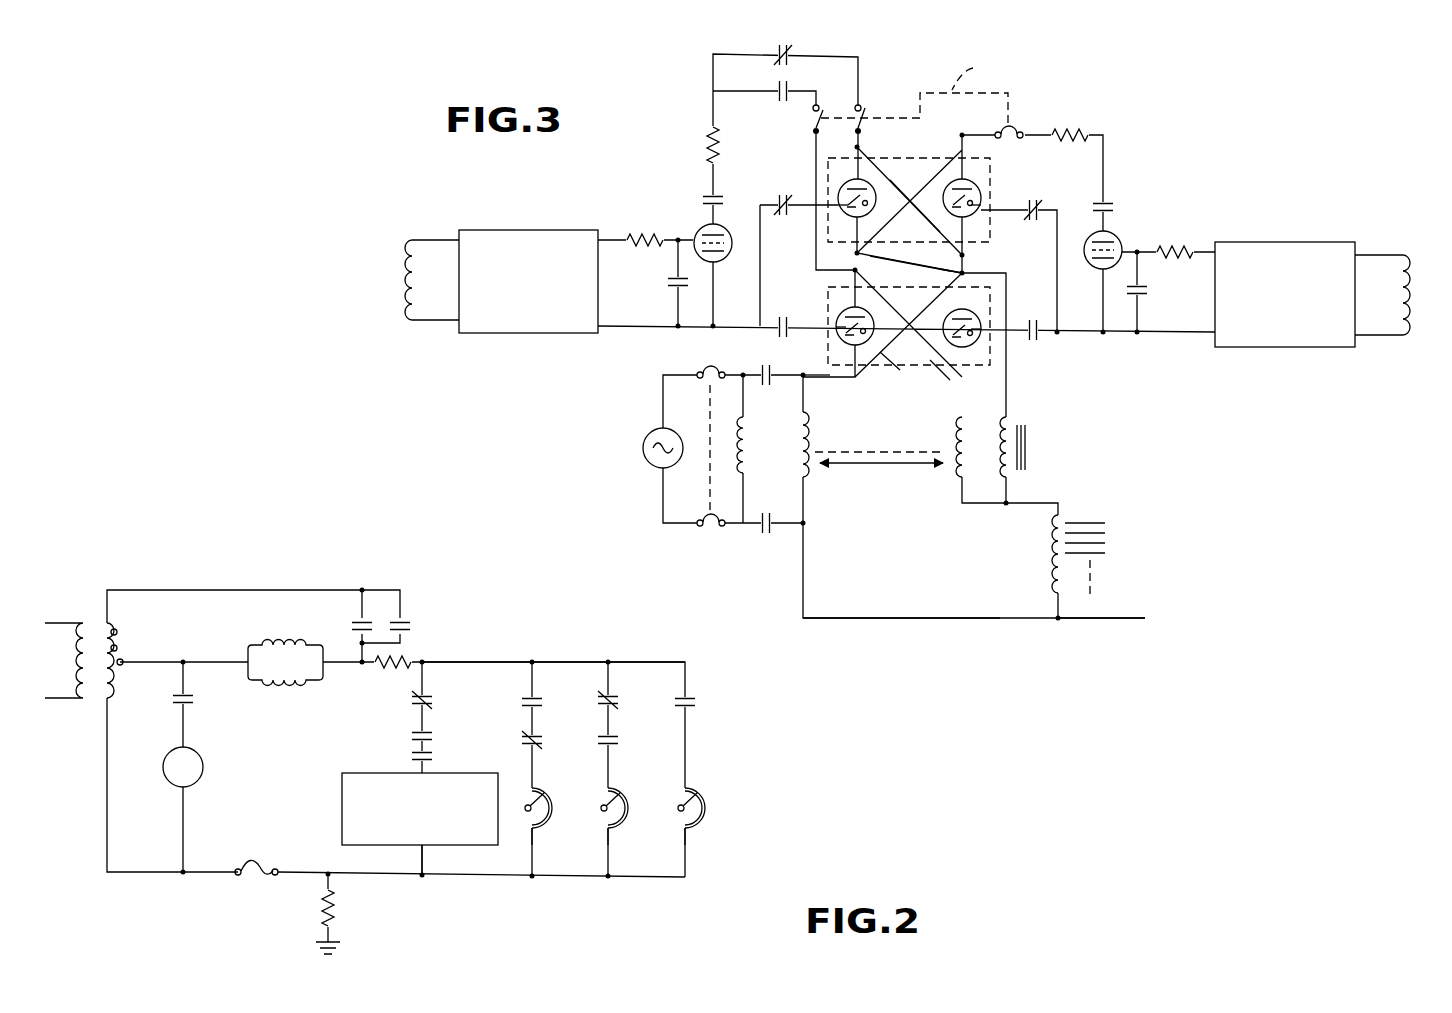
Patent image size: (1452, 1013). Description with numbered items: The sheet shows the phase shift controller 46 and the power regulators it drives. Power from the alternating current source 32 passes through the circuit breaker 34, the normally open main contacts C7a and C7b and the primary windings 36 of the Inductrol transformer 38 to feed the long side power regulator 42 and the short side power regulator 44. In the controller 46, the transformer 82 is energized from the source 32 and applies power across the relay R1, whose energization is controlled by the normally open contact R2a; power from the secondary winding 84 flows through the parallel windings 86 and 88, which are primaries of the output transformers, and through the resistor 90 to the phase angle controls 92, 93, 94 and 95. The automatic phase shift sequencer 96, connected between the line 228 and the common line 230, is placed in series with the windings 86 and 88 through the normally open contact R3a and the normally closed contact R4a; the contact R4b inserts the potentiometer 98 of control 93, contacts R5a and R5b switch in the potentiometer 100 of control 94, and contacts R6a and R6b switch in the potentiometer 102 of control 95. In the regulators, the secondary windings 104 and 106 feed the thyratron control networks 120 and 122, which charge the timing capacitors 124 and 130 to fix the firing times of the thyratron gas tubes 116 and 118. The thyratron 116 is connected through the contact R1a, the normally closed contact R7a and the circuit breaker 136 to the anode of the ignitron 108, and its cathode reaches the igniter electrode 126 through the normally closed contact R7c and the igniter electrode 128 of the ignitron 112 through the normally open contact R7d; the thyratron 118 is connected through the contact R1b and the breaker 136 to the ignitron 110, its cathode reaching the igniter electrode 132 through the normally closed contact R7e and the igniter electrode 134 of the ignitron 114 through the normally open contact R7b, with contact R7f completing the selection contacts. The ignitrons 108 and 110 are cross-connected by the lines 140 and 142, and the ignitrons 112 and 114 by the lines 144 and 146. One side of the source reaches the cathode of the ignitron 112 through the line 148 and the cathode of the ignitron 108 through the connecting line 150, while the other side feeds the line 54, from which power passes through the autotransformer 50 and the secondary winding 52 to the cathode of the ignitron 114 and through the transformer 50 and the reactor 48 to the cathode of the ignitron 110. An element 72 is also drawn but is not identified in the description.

In FIG. 3, the source of alternating current 32 is at (648, 432).
In FIG. 3, the circuit breaker 34 is at (708, 432).
In FIG. 3, the primary windings 36 is at (814, 437).
In FIG. 3, the Inductrol transformer 38 is at (880, 464).
In FIG. 3, the long side power regulator 42 is at (990, 176).
In FIG. 3, the short side power regulator 44 is at (990, 365).
In FIG. 2, the phase shift controller 46 is at (453, 660).
In FIG. 3, the reactor 48 is at (1012, 425).
In FIG. 3, the autotransformer 50 is at (1050, 560).
In FIG. 3, the secondary winding 52 is at (953, 436).
In FIG. 3, the line 54 is at (848, 618).
In FIG. 3, the output conductor 72 is at (1115, 618).
In FIG. 2, the transformer 82 is at (96, 618).
In FIG. 2, the secondary winding 84 is at (123, 646).
In FIG. 2, the output winding 86 is at (300, 640).
In FIG. 2, the output winding 88 is at (275, 690).
In FIG. 2, the resistor 90 is at (389, 670).
In FIG. 2, the phase angle control 92 is at (396, 750).
In FIG. 2, the phase angle control 93 is at (545, 784).
In FIG. 2, the phase angle control 94 is at (621, 784).
In FIG. 2, the phase angle control circuit 95 is at (698, 784).
In FIG. 2, the automatic phase shift sequencer 96 is at (342, 806).
In FIG. 2, the potentiometer 98 is at (540, 830).
In FIG. 2, the potentiometer 100 is at (616, 830).
In FIG. 2, the potentiometer 102 is at (694, 830).
In FIG. 3, the secondary winding 104 is at (404, 263).
In FIG. 3, the secondary winding 106 is at (1412, 280).
In FIG. 3, the ignitron 108 is at (884, 175).
In FIG. 3, the ignitron 110 is at (942, 165).
In FIG. 3, the ignitron 112 is at (872, 310).
In FIG. 3, the ignitron 114 is at (946, 313).
In FIG. 3, the thyratron gas tube 116 is at (717, 228).
In FIG. 3, the thyratron gas tube 118 is at (1121, 238).
In FIG. 3, the thyratron control network 120 is at (538, 333).
In FIG. 3, the thyratron control network 122 is at (1280, 347).
In FIG. 3, the timing capacitor 124 is at (670, 286).
In FIG. 3, the igniter electrode 126 is at (840, 200).
In FIG. 3, the igniter electrode 128 is at (838, 336).
In FIG. 3, the timing capacitor 130 is at (1150, 290).
In FIG. 3, the igniter electrode 132 is at (981, 205).
In FIG. 3, the igniter electrode 134 is at (983, 336).
In FIG. 3, the circuit breaker 136 is at (984, 73).
In FIG. 3, the line 140 is at (884, 224).
In FIG. 3, the line 142 is at (940, 258).
In FIG. 3, the line 144 is at (884, 350).
In FIG. 3, the line 146 is at (943, 372).
In FIG. 3, the line 148 is at (828, 385).
In FIG. 3, the connecting line 150 is at (945, 265).
In FIG. 2, the line 228 is at (431, 757).
In FIG. 2, the common line 230 is at (416, 866).
In FIG. 2, the relay R1 is at (168, 782).
In FIG. 3, the relay contact R1a is at (706, 200).
In FIG. 3, the relay contact R1b is at (1121, 206).
In FIG. 2, the relay contact R2a is at (192, 700).
In FIG. 2, the relay contact R3a is at (431, 737).
In FIG. 2, the relay contact R4a is at (432, 700).
In FIG. 2, the relay contact R4b is at (541, 702).
In FIG. 2, the relay contact R5a is at (541, 740).
In FIG. 2, the relay contact R5b is at (616, 740).
In FIG. 2, the relay contact R6a is at (616, 700).
In FIG. 2, the relay contact R6b is at (693, 702).
In FIG. 3, the relay contact R7a is at (792, 40).
In FIG. 3, the relay contact R7b is at (788, 103).
In FIG. 3, the relay contact R7c is at (784, 217).
In FIG. 3, the relay contact R7d is at (784, 316).
In FIG. 3, the relay contact R7e is at (1033, 222).
In FIG. 3, the relay contact R7f is at (1035, 316).
In FIG. 3, the main relay contact C7a is at (767, 387).
In FIG. 3, the main relay contact C7b is at (767, 511).